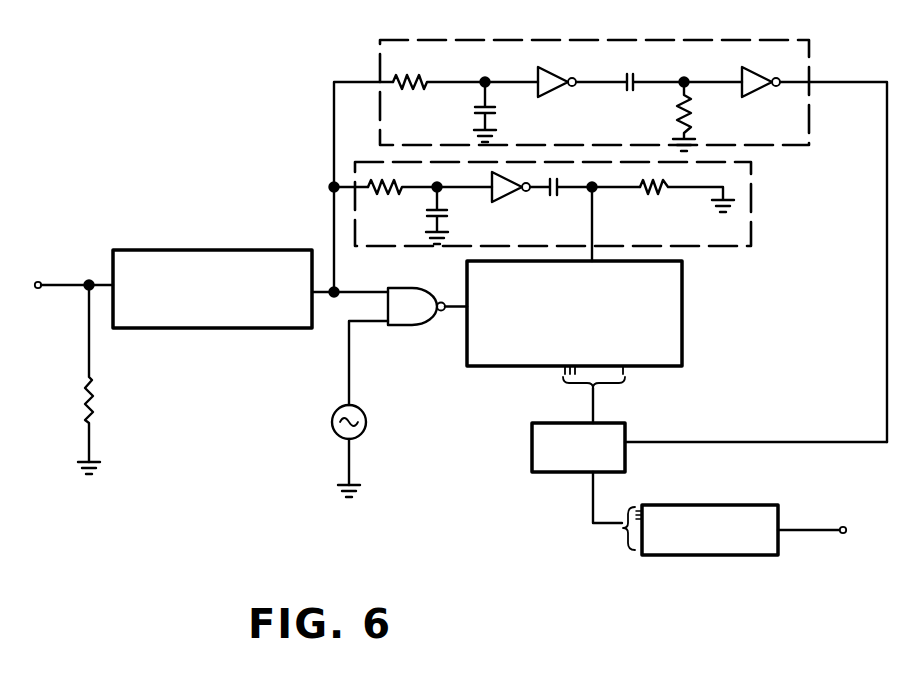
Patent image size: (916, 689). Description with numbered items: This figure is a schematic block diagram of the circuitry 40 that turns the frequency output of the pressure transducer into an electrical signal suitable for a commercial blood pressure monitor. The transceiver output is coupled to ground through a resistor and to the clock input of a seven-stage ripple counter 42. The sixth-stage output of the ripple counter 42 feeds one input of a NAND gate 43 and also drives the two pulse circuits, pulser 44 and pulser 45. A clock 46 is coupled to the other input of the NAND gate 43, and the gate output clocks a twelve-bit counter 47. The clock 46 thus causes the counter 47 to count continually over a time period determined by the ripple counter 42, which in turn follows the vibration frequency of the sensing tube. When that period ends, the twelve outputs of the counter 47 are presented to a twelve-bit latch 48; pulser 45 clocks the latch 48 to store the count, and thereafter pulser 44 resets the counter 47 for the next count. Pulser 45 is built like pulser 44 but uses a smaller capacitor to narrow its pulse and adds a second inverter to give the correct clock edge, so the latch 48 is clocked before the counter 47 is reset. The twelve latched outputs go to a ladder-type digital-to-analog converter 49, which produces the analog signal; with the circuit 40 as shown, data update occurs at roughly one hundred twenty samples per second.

The circuitry 40 is at (374, 513).
The 7-stage ripple counter 42 is at (259, 229).
The NAND gate 43 is at (410, 332).
The pulser 44 is at (757, 202).
The pulser 45 is at (814, 59).
The clock 46 is at (333, 434).
The 12-bit counter 47 is at (686, 312).
The 12-bit latch 48 is at (631, 424).
The digital-to-analog converter 49 is at (711, 500).